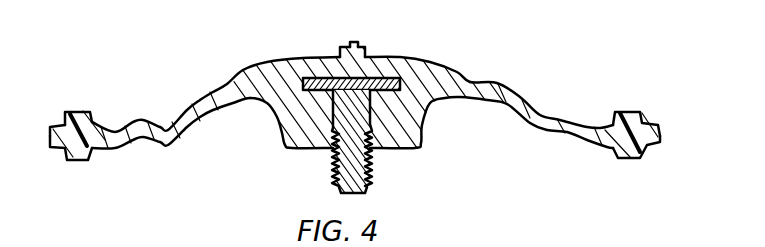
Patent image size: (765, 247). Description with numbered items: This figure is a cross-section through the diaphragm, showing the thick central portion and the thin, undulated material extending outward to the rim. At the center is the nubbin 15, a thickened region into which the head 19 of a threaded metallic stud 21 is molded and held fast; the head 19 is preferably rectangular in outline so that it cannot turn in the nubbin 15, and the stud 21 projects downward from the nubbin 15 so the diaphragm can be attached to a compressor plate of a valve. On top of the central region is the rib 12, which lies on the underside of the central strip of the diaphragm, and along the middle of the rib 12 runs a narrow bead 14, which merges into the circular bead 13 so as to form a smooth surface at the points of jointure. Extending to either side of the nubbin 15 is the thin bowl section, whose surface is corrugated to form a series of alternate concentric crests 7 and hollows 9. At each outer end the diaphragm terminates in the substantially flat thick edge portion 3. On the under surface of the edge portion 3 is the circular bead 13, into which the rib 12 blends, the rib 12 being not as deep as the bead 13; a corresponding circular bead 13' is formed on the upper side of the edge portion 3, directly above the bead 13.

The edge portion 3 is at (650, 123).
The crests 7 is at (538, 130).
The hollows 9 is at (142, 132).
The rib 12 is at (363, 44).
The circular bead 13 is at (355, 109).
The circular bead 13' is at (349, 150).
The narrow bead 14 is at (352, 42).
The nubbin 15 is at (395, 150).
The head 19 is at (396, 77).
The threaded metallic stud 21 is at (335, 163).